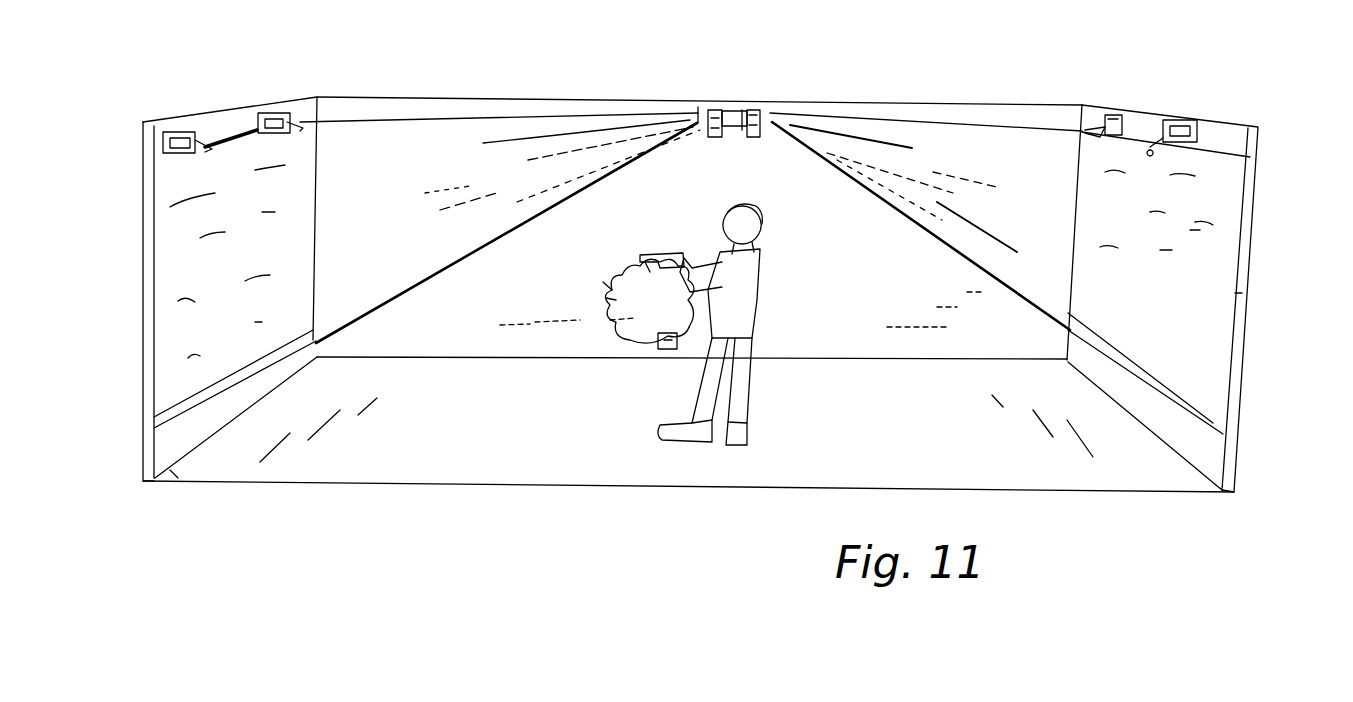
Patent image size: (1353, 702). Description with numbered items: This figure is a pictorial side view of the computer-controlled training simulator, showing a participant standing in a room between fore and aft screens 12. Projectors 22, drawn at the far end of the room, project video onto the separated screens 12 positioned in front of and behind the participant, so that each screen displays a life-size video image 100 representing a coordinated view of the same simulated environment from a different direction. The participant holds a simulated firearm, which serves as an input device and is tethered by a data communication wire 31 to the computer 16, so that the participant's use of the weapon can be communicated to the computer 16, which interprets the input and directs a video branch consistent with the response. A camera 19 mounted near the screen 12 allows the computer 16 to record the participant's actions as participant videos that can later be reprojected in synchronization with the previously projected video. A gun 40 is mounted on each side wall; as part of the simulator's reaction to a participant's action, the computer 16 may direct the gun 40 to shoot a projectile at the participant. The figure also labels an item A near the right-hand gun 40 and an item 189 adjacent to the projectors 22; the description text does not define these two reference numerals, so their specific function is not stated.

The screen 12 is at (147, 203).
The life-size video image 100 is at (235, 165).
The camera 19 is at (172, 128).
The gun 40 is at (287, 107).
The auxiliary unit A is at (1190, 122).
The projector 22 is at (744, 110).
The target indicator 189 is at (760, 110).
The communication wire 31 is at (648, 301).
The computer 16 is at (662, 350).